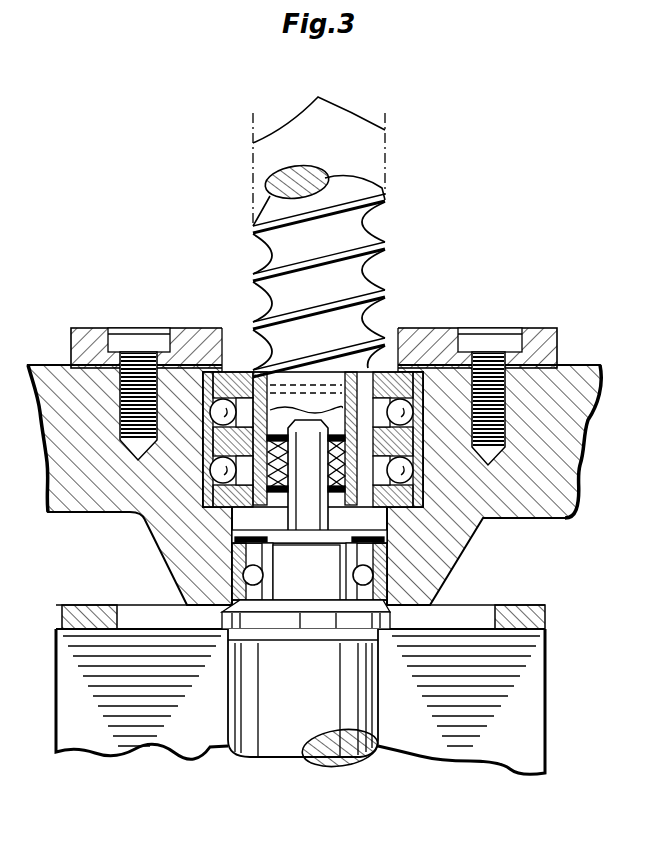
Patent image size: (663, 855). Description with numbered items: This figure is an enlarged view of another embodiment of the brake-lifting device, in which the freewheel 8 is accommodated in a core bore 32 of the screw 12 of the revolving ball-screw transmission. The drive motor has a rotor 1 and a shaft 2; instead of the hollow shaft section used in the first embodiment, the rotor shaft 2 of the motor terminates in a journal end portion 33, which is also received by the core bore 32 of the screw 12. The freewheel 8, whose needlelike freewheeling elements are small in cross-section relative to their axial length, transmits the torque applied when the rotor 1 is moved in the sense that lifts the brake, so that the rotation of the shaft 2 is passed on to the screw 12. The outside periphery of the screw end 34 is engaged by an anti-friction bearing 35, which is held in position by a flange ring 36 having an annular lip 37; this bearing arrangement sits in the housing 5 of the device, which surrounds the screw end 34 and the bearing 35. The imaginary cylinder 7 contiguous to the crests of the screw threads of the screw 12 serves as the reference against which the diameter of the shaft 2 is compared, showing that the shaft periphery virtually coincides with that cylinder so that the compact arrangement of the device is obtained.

The rotor 1 is at (530, 662).
The shaft 2 is at (306, 727).
The housing 5 is at (557, 507).
The imaginary cylinder 7 is at (318, 97).
The freewheel 8 is at (210, 508).
The screw 12 is at (370, 234).
The core bore 32 is at (270, 374).
The journal end portion 33 is at (230, 550).
The screw end 34 is at (333, 383).
The anti-friction bearing 35 is at (423, 413).
The flange ring 36 is at (82, 333).
The annular lip 37 is at (212, 372).